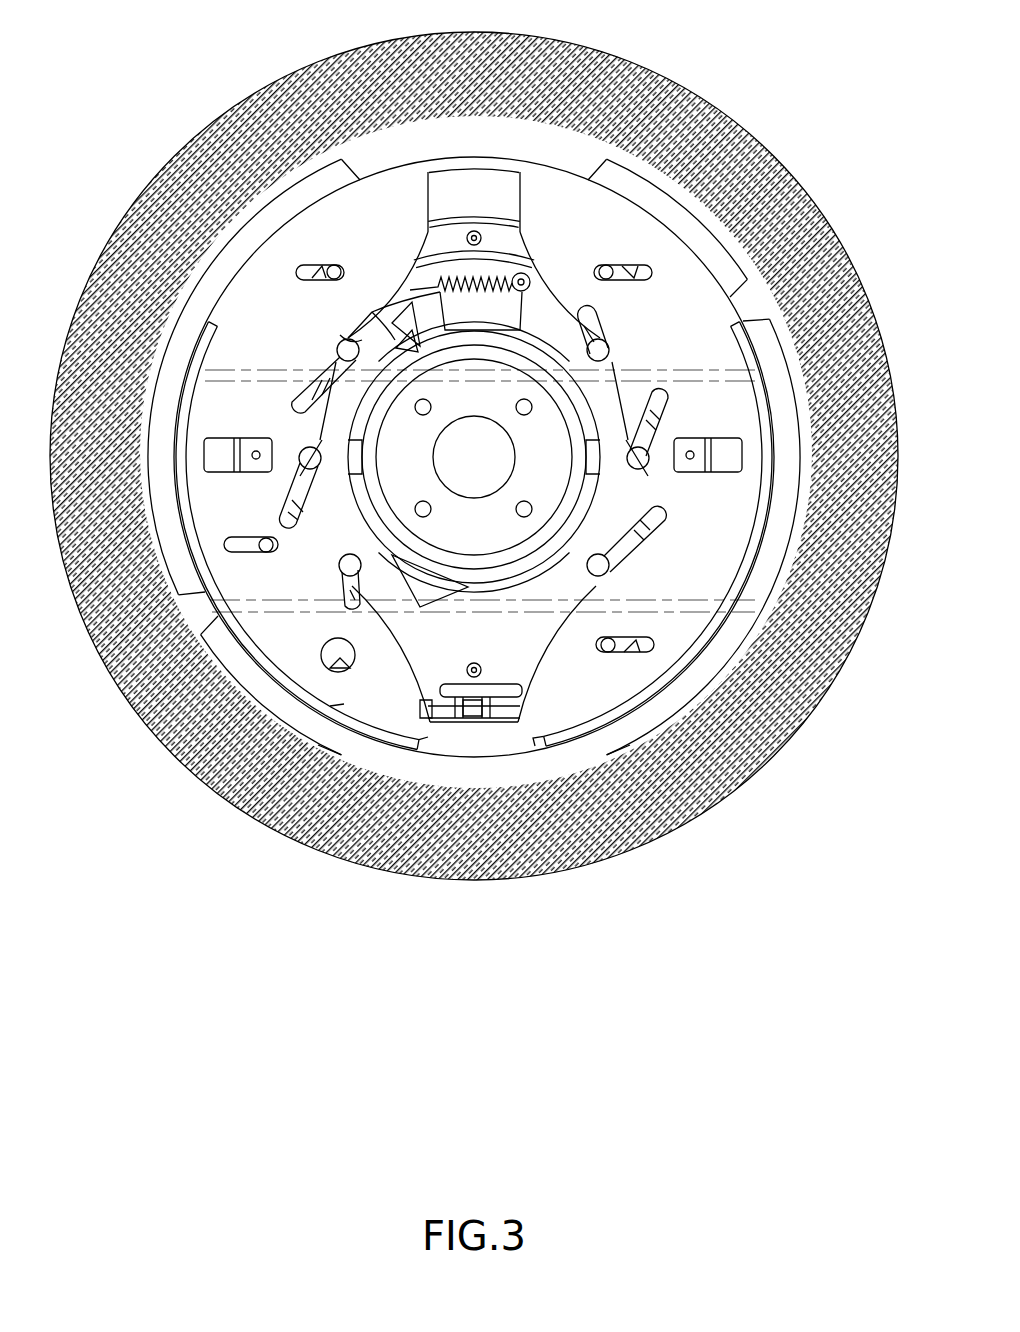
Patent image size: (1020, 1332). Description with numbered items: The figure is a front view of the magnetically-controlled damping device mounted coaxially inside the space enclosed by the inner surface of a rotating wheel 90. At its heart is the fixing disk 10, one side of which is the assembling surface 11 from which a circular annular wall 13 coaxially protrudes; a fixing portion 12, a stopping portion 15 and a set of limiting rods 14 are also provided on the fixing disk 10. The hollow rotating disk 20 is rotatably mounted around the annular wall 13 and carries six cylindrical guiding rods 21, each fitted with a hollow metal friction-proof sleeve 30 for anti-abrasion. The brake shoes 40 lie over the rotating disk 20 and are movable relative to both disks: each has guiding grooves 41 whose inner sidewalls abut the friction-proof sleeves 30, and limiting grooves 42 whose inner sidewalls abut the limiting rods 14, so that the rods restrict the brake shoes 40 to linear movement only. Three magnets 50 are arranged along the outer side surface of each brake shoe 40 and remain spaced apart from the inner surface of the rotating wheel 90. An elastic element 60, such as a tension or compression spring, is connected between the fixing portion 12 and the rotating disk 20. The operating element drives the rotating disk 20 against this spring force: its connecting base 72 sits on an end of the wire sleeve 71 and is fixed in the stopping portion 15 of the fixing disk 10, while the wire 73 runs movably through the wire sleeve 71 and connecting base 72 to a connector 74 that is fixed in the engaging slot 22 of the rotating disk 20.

The fixing disk 10 is at (488, 183).
The assembling surface 11 is at (428, 232).
The fixing portion 12 is at (527, 278).
The annular wall 13 is at (529, 365).
The limiting rods 14 is at (612, 272).
The stopping portion 15 is at (487, 717).
The rotating disk 20 is at (386, 302).
The guiding rods 21 is at (345, 348).
The engaging slot 22 is at (342, 656).
The friction-proof sleeves 30 is at (640, 455).
The brake shoes 40 is at (760, 423).
The guiding grooves 41 is at (296, 500).
The limiting grooves 42 is at (220, 470).
The magnets 50 is at (257, 220).
The elastic element 60 is at (487, 282).
The wire sleeve 71 is at (506, 705).
The connecting base 72 is at (473, 715).
The wire 73 is at (430, 710).
The connector 74 is at (357, 712).
The rotating wheel 90 is at (705, 795).